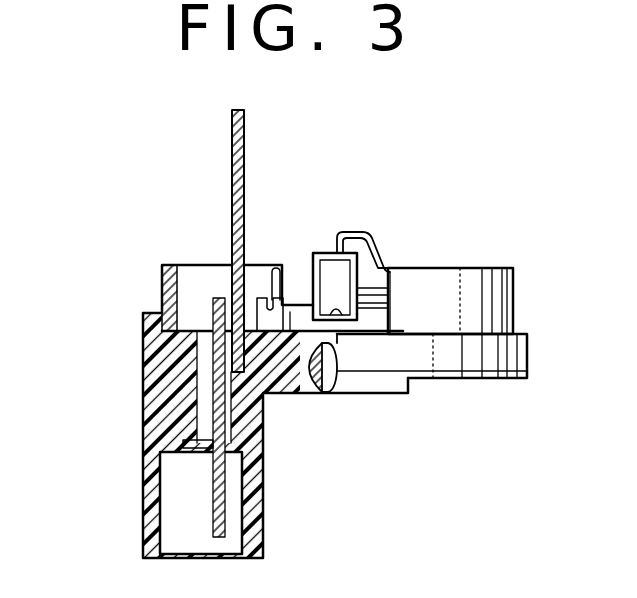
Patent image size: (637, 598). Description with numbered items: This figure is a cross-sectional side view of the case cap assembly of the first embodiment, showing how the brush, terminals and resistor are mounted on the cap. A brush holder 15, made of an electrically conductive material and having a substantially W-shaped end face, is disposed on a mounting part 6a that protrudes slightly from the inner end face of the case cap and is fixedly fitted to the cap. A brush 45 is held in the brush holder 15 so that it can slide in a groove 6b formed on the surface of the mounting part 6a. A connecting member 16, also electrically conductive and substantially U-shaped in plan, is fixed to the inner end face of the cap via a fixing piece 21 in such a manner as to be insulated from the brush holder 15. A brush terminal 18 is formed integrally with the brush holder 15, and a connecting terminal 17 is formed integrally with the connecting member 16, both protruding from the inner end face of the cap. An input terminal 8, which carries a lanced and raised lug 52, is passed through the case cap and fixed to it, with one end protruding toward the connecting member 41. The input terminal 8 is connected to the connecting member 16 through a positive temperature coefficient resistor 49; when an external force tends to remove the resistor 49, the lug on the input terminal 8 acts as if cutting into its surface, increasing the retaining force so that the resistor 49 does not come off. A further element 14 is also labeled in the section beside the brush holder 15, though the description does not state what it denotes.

The mounting part 6a is at (338, 343).
The groove 6b is at (347, 317).
The input terminal 8 is at (213, 302).
The spring clip 14 is at (352, 232).
The brush holder 15 is at (321, 253).
The connecting member 16 is at (293, 241).
The connecting terminal 17 is at (246, 292).
The brush terminal 18 is at (280, 268).
The fixing piece 21 is at (247, 358).
The connecting member 41 is at (142, 380).
The brush 45 is at (342, 281).
The positive temperature coefficient resistor 49 is at (234, 252).
The lanced and raised lug 52 is at (193, 450).